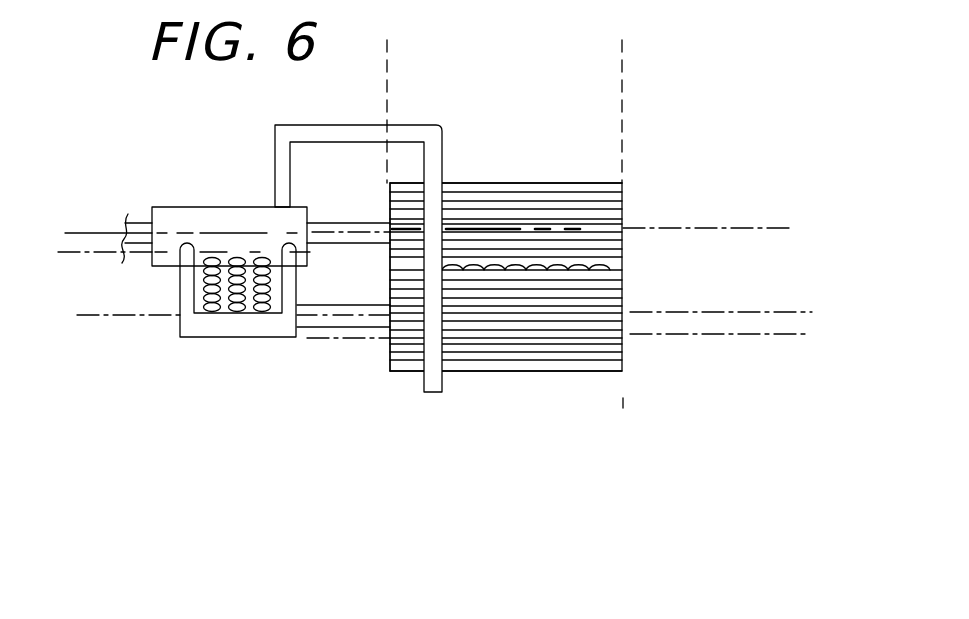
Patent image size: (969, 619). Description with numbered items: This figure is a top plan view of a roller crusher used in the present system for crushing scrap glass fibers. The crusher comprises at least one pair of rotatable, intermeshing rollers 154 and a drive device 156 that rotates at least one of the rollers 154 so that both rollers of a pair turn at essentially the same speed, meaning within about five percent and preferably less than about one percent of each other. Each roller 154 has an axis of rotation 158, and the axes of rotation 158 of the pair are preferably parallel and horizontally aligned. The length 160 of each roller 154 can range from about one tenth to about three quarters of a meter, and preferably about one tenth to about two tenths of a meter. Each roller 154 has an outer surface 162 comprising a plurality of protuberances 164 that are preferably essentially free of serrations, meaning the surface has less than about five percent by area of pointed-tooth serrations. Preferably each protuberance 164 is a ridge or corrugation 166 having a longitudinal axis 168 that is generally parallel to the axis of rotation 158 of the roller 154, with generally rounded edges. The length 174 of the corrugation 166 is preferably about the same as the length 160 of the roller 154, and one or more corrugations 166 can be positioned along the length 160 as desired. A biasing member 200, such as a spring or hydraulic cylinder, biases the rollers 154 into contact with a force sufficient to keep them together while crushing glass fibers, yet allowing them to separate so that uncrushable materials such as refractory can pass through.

The roller 154 is at (623, 208).
The drive device 156 is at (197, 210).
The axis of rotation 158 is at (768, 228).
The length 160 is at (528, 296).
The outer surface 162 is at (520, 183).
The protuberance 164 is at (623, 348).
The corrugation 166 is at (345, 294).
The longitudinal axis 168 is at (788, 334).
The length of the corrugation 174 is at (620, 63).
The biasing member 200 is at (205, 283).